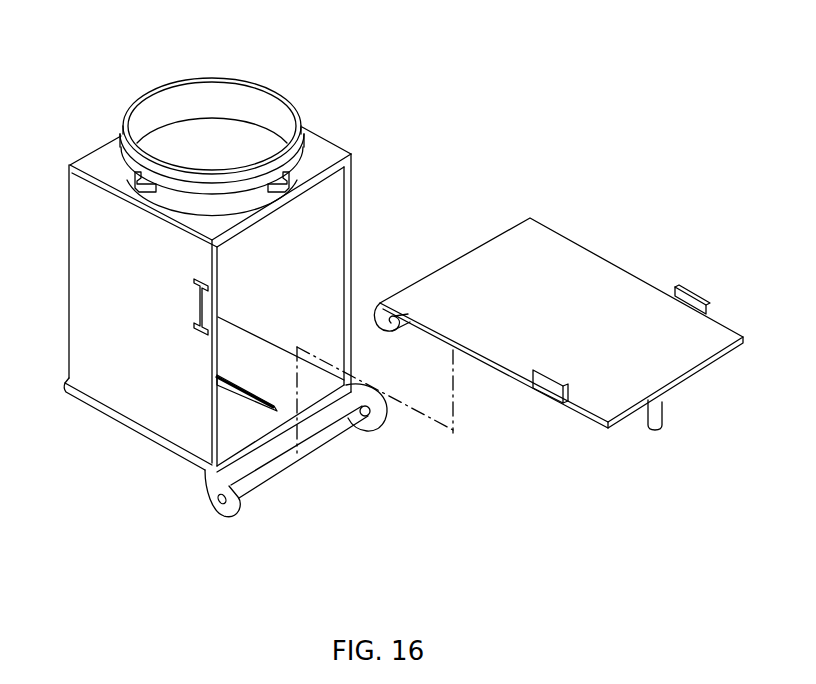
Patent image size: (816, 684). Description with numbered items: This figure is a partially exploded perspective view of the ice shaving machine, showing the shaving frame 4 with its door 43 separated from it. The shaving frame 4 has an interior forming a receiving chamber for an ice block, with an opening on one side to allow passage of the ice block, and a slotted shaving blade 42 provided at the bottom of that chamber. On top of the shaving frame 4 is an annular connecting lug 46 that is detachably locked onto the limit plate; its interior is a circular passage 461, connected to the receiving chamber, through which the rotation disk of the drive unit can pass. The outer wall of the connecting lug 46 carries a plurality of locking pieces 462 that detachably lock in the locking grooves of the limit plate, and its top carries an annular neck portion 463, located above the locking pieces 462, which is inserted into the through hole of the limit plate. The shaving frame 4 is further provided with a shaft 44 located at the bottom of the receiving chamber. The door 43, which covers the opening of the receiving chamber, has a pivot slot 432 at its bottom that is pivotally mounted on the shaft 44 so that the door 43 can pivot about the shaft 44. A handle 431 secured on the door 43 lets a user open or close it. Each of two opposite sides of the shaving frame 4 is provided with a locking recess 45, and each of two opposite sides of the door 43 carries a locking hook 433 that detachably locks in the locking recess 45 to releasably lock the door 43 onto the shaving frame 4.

The shaving frame 4 is at (78, 287).
The slotted shaving blade 42 is at (245, 397).
The door 43 is at (582, 265).
The handle 431 is at (655, 413).
The pivot slot 432 is at (388, 325).
The locking hook 433 is at (688, 298).
The shaft 44 is at (313, 443).
The locking recess 45 is at (201, 317).
The connecting lug 46 is at (123, 146).
The passage 461 is at (213, 108).
The locking pieces 462 is at (140, 183).
The neck portion 463 is at (290, 141).